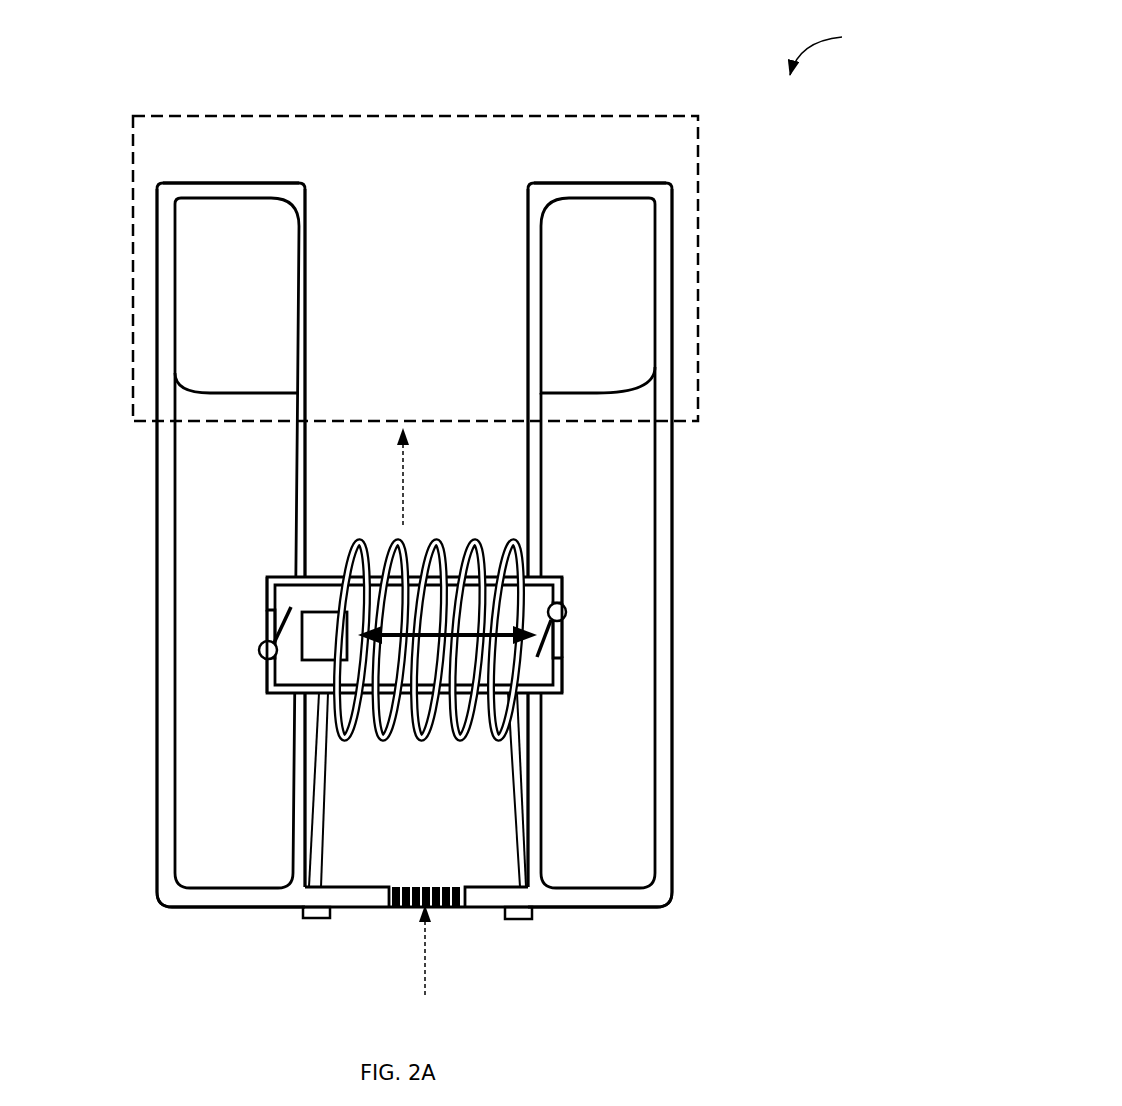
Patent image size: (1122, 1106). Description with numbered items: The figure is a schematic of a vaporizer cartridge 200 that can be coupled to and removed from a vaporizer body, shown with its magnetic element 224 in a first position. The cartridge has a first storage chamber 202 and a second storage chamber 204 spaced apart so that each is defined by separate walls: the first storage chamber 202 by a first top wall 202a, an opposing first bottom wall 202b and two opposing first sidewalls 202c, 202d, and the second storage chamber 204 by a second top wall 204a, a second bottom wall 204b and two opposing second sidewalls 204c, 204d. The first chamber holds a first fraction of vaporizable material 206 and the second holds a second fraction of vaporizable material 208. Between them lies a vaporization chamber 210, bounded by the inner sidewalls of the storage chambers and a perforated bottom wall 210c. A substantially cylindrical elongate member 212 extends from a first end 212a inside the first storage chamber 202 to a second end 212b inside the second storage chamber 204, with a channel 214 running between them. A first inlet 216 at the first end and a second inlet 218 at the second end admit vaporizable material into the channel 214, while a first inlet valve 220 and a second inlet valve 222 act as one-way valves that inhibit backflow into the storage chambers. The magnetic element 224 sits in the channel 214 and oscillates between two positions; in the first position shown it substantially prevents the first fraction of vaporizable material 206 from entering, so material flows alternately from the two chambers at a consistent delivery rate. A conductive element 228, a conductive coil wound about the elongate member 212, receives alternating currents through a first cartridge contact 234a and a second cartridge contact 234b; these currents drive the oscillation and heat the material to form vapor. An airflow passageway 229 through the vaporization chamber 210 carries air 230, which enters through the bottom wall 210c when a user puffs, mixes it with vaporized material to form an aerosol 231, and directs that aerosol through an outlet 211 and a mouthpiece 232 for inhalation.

The vaporizer cartridge 200 is at (840, 50).
The first storage chamber 202 is at (150, 195).
The first top wall 202a is at (258, 190).
The first bottom wall 202b is at (205, 897).
The first sidewall 202c is at (301, 247).
The first sidewall 202d is at (167, 251).
The second storage chamber 204 is at (683, 213).
The second top wall 204a is at (620, 190).
The second bottom wall 204b is at (620, 898).
The second sidewall 204c is at (533, 342).
The second sidewall 204d is at (663, 299).
The first fraction of vaporizable material 206 is at (208, 495).
The second fraction of vaporizable material 208 is at (632, 438).
The vaporization chamber 210 is at (497, 863).
The bottom wall 210c is at (367, 893).
The outlet 211 is at (494, 169).
The elongate member 212 is at (322, 577).
The first end 212a is at (268, 683).
The second end 212b is at (562, 680).
The channel 214 is at (405, 673).
The first inlet 216 is at (254, 622).
The second inlet 218 is at (570, 634).
The first inlet valve 220 is at (278, 590).
The second inlet valve 222 is at (550, 601).
The magnetic element 224 is at (328, 652).
The conductive element 228 is at (468, 722).
The airflow passageway 229 is at (447, 504).
The air 230 is at (423, 972).
The aerosol 231 is at (403, 485).
The mouthpiece 232 is at (325, 114).
The first cartridge contact 234a is at (313, 910).
The second cartridge contact 234b is at (518, 912).